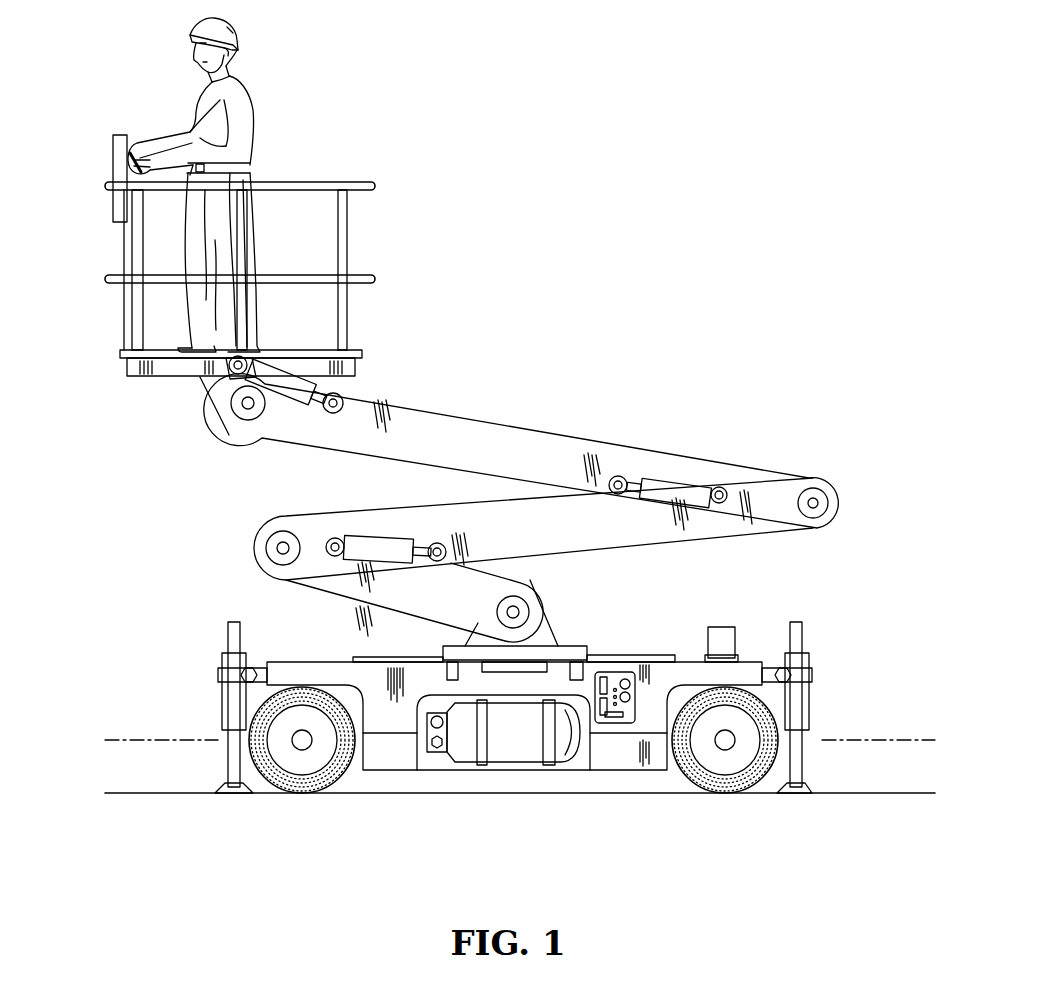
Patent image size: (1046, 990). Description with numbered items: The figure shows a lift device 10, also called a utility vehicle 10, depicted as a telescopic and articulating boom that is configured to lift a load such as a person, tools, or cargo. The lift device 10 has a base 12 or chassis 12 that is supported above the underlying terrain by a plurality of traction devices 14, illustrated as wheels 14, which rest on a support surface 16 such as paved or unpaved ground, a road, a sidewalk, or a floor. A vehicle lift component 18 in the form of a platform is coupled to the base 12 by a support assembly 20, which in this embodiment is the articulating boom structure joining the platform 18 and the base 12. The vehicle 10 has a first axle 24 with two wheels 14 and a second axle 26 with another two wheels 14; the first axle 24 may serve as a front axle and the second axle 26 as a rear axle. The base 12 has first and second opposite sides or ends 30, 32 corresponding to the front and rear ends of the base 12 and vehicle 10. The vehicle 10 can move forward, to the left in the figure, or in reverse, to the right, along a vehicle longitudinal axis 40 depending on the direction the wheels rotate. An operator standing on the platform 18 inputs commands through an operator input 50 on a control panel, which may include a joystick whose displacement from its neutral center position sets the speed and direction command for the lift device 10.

The lift device 10 is at (697, 180).
The base 12 is at (650, 642).
The traction devices 14 is at (521, 777).
The support surface 16 is at (182, 790).
The vehicle lift component 18 is at (209, 270).
The support assembly 20 is at (540, 428).
The first axle 24 is at (300, 742).
The second axle 26 is at (724, 742).
The first side 30 is at (214, 722).
The second side 32 is at (830, 722).
The vehicle longitudinal axis 40 is at (892, 748).
The operator input 50 is at (128, 152).